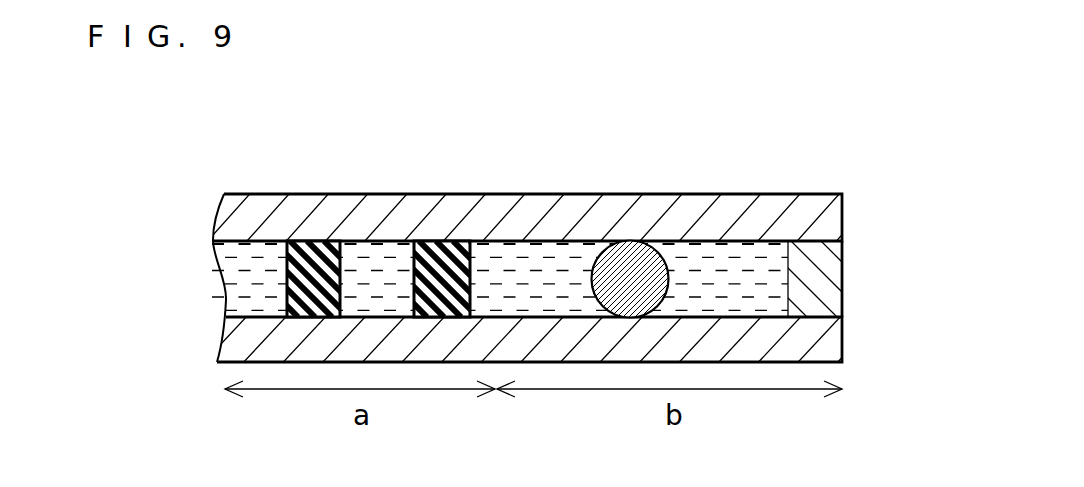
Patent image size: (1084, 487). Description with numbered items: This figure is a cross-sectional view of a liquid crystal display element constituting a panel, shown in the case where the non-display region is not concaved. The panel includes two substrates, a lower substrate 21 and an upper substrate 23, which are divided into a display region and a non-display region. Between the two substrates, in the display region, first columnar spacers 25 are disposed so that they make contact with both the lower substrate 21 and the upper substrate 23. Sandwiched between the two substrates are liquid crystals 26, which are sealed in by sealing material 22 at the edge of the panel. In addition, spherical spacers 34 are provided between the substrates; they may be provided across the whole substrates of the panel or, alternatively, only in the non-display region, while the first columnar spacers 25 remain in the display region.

The lower substrate 21 is at (830, 342).
The sealing material 22 is at (830, 278).
The upper substrate 23 is at (830, 220).
The first columnar spacers 25 is at (435, 247).
The liquid crystals 26 is at (534, 258).
The spherical spacers 34 is at (630, 247).